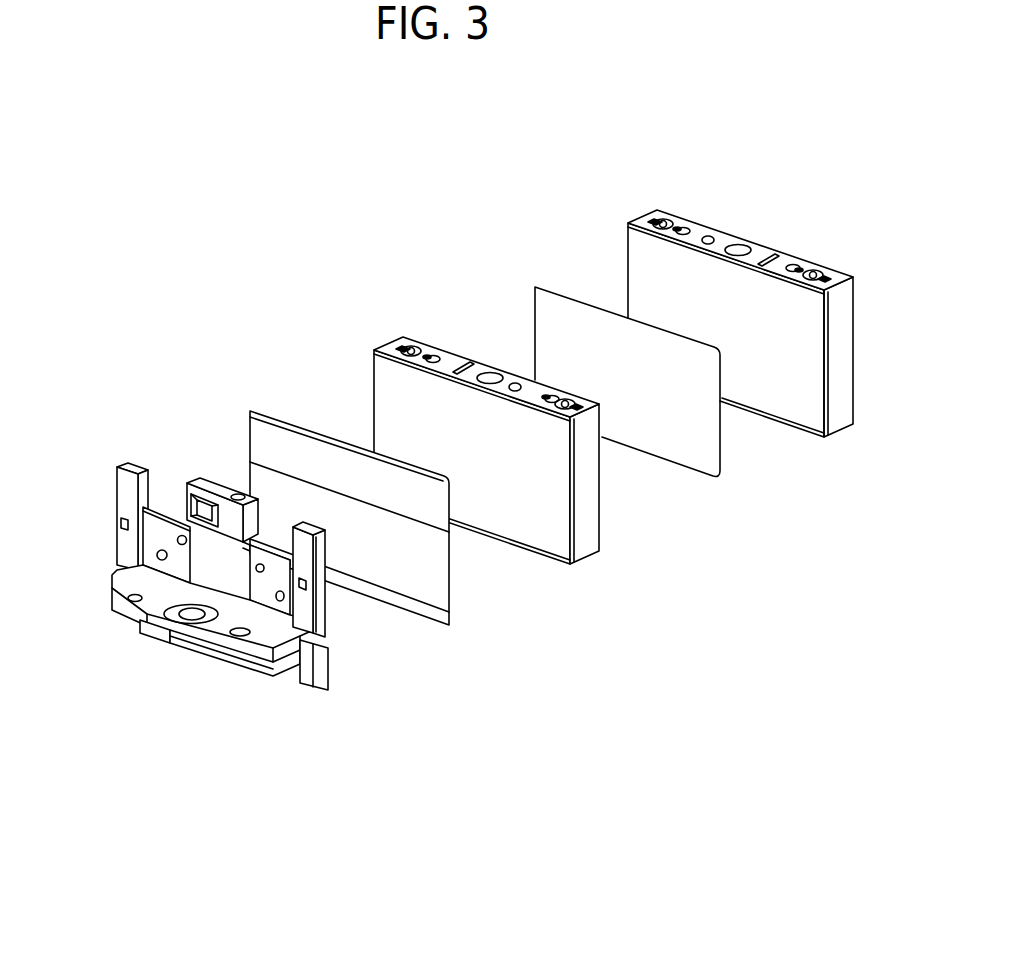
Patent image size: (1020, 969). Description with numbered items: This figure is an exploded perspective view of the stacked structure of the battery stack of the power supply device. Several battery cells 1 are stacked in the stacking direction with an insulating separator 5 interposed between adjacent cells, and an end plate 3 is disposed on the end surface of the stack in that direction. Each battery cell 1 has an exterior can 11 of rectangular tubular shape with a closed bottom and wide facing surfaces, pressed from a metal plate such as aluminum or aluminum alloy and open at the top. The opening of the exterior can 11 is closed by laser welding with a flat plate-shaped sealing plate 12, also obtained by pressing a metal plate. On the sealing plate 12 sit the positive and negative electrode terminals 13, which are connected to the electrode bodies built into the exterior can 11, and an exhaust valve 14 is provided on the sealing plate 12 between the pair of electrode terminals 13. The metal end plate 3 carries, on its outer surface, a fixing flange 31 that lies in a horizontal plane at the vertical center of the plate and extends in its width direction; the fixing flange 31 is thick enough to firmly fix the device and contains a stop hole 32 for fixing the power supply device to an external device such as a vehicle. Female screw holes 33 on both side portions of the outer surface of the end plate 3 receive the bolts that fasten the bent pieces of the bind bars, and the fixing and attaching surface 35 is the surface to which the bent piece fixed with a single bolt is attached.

The battery cell 1 is at (557, 384).
The end plate 3 is at (245, 632).
The insulating separator 5 is at (663, 423).
The exterior can 11 is at (782, 396).
The sealing plate 12 is at (724, 243).
The electrode terminal 13 is at (410, 347).
The exhaust valve 14 is at (492, 372).
The fixing flange 31 is at (181, 643).
The stop hole 32 is at (176, 601).
The female screw hole 33 is at (268, 604).
The fixing and attaching surface 35 is at (290, 682).